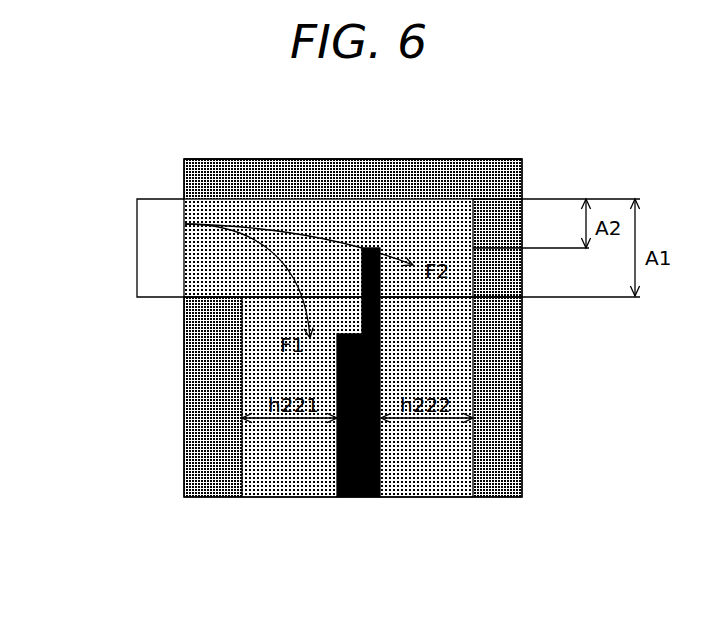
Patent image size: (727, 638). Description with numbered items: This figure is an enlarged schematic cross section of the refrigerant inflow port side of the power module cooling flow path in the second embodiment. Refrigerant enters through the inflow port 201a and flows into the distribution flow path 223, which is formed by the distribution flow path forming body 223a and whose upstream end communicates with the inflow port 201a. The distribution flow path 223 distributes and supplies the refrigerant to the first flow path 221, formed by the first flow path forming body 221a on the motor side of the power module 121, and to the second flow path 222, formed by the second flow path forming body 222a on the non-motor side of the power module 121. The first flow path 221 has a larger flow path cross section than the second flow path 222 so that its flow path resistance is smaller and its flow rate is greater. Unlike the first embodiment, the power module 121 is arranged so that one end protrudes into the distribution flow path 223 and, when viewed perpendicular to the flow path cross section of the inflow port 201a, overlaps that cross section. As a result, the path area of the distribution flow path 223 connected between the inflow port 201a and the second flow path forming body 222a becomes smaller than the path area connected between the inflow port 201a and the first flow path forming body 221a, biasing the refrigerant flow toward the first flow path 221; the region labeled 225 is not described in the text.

The power module 121 is at (360, 498).
The inflow port 201a is at (148, 258).
The first flow path 221 is at (287, 487).
The first flow path forming body 221a is at (198, 447).
The second flow path 222 is at (428, 485).
The second flow path forming body 222a is at (510, 447).
The distribution flow path 223 is at (421, 214).
The distribution flow path forming body 223a is at (338, 158).
The contact portion 225 is at (381, 318).